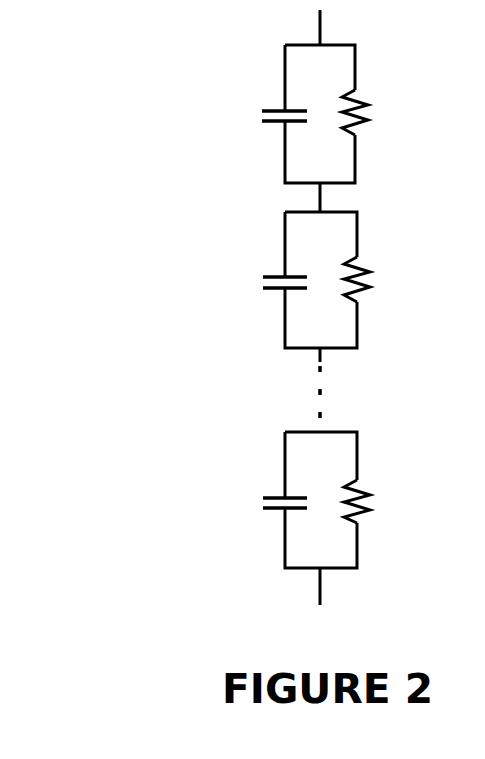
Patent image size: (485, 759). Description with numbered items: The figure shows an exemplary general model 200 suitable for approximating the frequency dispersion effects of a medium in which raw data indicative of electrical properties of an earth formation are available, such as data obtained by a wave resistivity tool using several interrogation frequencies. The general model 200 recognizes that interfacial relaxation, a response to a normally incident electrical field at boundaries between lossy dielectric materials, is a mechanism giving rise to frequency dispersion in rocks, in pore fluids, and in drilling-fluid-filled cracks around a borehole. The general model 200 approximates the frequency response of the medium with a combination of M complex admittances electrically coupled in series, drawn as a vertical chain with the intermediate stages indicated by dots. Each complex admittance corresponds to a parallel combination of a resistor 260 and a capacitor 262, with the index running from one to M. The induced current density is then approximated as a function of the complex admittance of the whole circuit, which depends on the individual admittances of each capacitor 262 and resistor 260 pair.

The general model 200 is at (222, 80).
The resistor 260 is at (370, 120).
The capacitor 262 is at (270, 128).